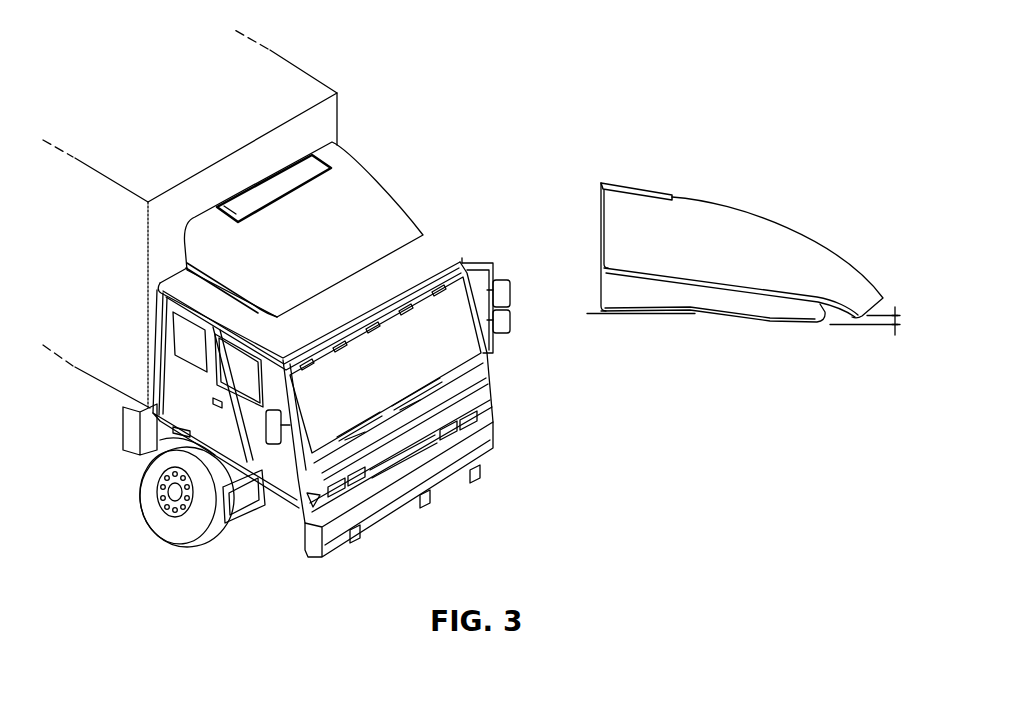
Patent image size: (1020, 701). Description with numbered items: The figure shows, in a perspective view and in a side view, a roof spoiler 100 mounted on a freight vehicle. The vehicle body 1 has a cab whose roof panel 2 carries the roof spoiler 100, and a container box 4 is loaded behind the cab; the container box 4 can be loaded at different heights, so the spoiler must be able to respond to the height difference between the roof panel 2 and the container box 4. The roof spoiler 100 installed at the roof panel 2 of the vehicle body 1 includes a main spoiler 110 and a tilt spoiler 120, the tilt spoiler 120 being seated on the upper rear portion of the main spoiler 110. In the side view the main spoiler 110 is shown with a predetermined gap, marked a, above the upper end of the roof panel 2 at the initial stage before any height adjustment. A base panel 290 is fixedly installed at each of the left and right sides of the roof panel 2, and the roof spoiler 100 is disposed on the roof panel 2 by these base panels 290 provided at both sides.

The vehicle body 1 is at (462, 258).
The roof panel 2 is at (440, 240).
The container box 4 is at (333, 83).
The roof spoiler 100 is at (466, 212).
The main spoiler 110 is at (352, 196).
The tilt spoiler 120 is at (352, 158).
The base panel 290 is at (213, 283).